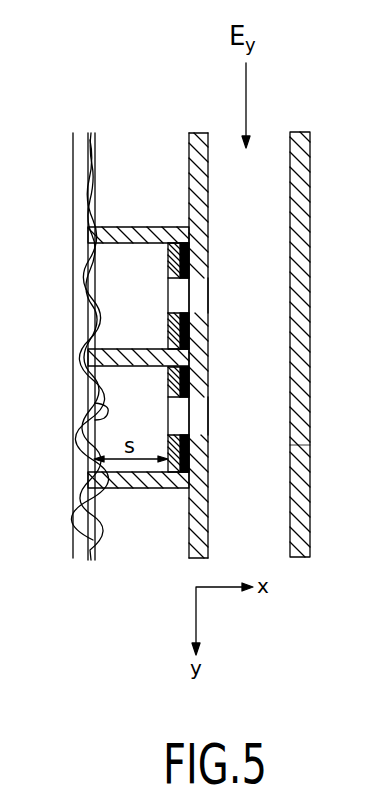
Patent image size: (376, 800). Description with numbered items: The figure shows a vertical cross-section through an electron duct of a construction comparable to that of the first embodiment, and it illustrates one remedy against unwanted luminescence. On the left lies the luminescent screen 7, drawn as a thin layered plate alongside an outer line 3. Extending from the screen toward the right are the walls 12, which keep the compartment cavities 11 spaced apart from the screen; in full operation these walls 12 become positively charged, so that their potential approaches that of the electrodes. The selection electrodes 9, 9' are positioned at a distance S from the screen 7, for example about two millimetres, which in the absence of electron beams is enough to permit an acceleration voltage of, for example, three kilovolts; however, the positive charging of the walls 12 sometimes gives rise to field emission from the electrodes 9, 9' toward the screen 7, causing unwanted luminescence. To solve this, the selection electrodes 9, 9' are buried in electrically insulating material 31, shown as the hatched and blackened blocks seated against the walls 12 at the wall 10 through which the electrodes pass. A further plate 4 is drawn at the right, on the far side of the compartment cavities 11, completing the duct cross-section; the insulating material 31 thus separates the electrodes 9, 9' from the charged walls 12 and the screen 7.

The outer wall line 3 is at (73, 184).
The luminescent screen 7 is at (95, 422).
The walls 12 is at (122, 228).
The electrically insulating material 31 is at (168, 264).
The selection electrode 9 is at (205, 296).
The selection electrode 9' is at (205, 426).
The wall 10 is at (197, 518).
The plate 4 is at (300, 380).
The compartment cavities 11 is at (272, 446).